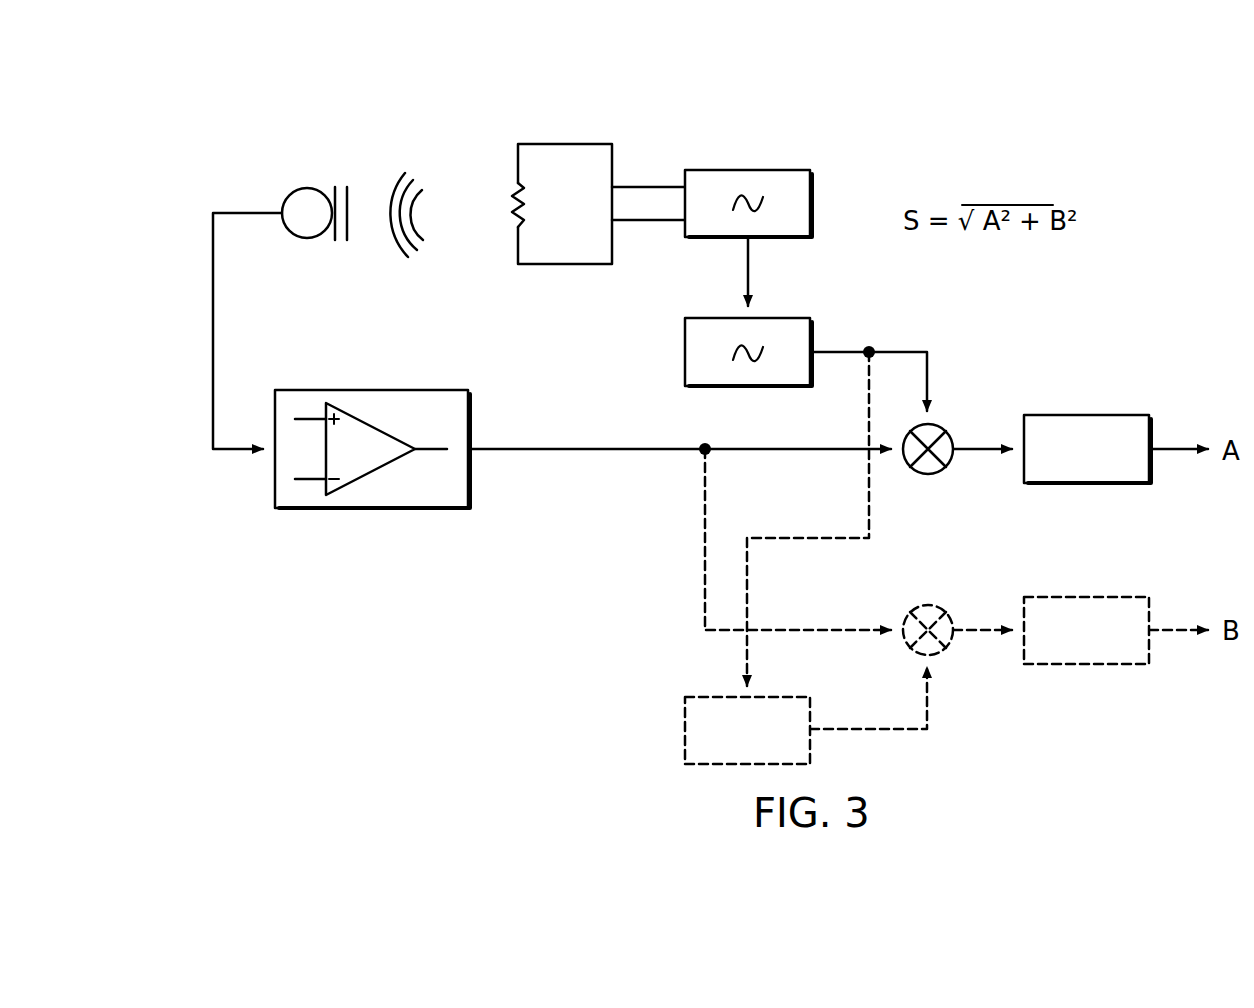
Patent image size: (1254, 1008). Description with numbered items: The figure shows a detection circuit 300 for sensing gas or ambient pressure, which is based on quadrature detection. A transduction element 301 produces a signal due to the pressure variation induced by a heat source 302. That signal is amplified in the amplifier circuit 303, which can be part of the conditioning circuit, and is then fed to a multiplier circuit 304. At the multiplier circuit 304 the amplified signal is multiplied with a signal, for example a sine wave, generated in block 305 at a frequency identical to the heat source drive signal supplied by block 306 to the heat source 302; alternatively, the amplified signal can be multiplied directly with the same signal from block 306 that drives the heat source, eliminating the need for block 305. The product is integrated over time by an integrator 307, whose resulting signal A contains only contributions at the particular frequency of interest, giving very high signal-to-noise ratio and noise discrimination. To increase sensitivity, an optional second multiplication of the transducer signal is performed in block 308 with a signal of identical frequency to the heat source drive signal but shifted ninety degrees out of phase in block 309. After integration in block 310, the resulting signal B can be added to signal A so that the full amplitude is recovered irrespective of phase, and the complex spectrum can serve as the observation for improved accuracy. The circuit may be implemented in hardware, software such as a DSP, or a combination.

The detection circuit 300 is at (178, 130).
The transduction element 301 is at (306, 188).
The heat source 302 is at (515, 192).
The amplifier circuit 303 is at (370, 390).
The multiplier circuit 304 is at (930, 475).
The signal generation block 305 is at (685, 352).
The heat source drive signal block 306 is at (746, 170).
The integrator 307 is at (1086, 415).
The second multiplication block 308 is at (925, 605).
The phase shift block 309 is at (685, 729).
The second integrator block 310 is at (1086, 597).